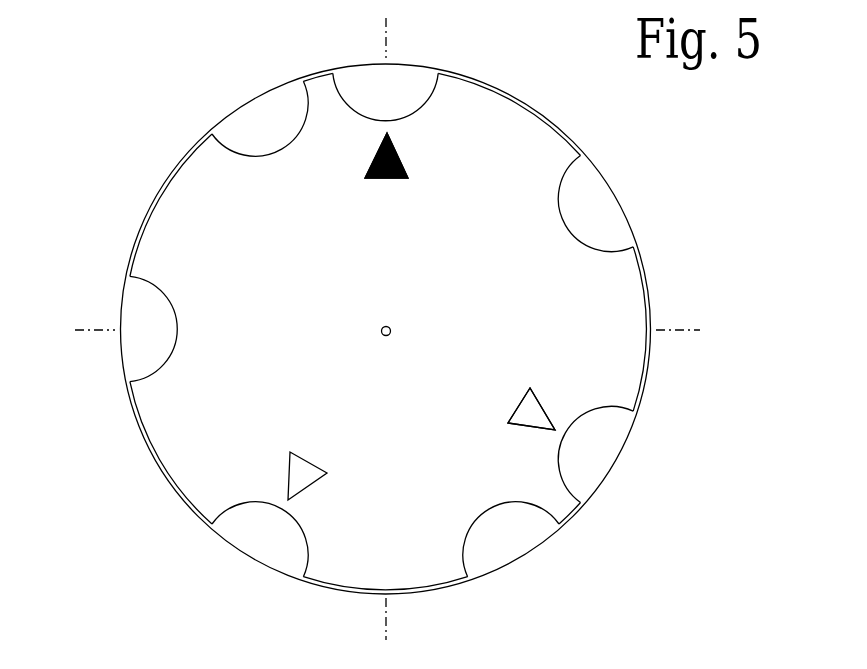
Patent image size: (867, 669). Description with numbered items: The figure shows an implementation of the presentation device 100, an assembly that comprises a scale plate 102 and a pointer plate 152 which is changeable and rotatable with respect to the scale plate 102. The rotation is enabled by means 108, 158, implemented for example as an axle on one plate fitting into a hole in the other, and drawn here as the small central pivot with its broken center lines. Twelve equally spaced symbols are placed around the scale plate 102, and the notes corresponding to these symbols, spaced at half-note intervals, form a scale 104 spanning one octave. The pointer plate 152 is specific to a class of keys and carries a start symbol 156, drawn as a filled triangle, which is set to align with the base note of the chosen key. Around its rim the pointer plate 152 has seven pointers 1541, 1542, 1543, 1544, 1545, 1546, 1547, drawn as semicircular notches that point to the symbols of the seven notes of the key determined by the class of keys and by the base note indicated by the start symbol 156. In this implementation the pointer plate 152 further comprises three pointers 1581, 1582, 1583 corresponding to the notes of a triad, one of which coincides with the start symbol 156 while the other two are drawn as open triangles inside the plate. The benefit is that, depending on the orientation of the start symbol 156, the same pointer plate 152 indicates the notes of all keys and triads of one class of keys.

The presentation device 100 is at (97, 104).
The scale plate 102 is at (167, 180).
The pointer plate 152 is at (147, 217).
The scale 104 is at (374, 81).
The pointer 1541 is at (424, 107).
The pointer 1542 is at (581, 242).
The pointer 1543 is at (593, 410).
The pointer 1544 is at (478, 517).
The pointer 1545 is at (303, 533).
The pointer 1546 is at (178, 329).
The pointer 1547 is at (269, 155).
The start symbol 156 is at (387, 178).
The rotation means 158 is at (476, 409).
The triad pointer 1581 is at (388, 207).
The triad pointer 1582 is at (520, 405).
The triad pointer 1583 is at (312, 462).
The rotation means 108 is at (388, 337).